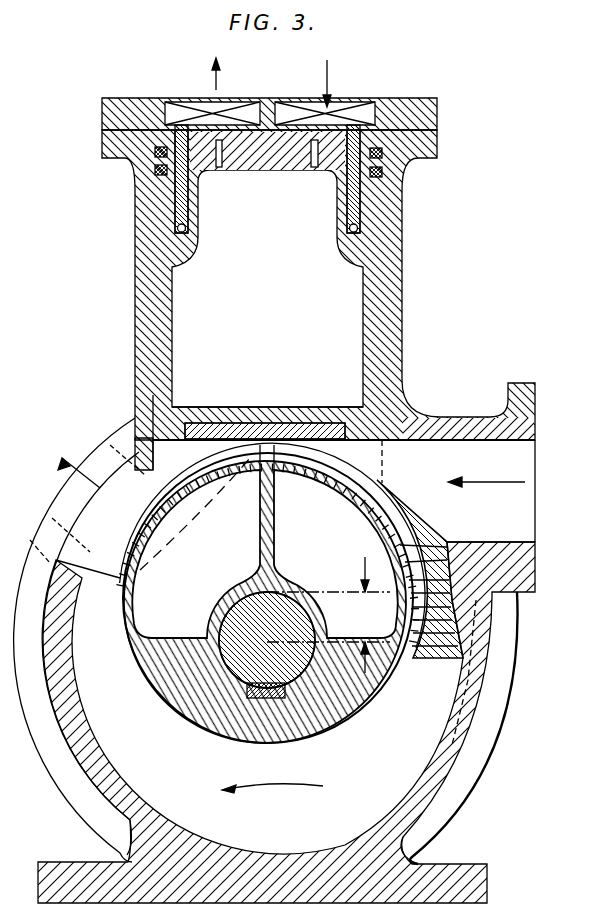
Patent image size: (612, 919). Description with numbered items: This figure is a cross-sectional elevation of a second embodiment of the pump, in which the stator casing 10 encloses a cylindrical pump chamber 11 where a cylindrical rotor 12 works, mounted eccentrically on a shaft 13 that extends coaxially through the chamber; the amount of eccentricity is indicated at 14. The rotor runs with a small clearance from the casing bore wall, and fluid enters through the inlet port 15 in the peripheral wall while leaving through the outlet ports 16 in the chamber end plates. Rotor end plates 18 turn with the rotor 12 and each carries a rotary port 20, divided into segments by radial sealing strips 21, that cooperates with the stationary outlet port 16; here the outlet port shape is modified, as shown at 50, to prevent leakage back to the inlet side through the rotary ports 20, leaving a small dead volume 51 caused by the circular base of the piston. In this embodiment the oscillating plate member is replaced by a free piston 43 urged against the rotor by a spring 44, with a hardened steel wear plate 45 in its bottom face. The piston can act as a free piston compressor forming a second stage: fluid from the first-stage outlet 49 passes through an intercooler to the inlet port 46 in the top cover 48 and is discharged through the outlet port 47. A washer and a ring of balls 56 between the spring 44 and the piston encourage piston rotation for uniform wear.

The stator casing 10 is at (457, 750).
The cylindrical pump chamber 11 is at (440, 707).
The cylindrical rotor 12 is at (213, 708).
The shaft 13 is at (292, 667).
The eccentricity of the rotor 14 is at (328, 615).
The inlet port 15 is at (505, 487).
The outlet ports 16 is at (108, 576).
The rotor end plates 18 is at (388, 783).
The rotary port 20 is at (443, 627).
The radial sealing strips 21 is at (450, 610).
The free piston 43 is at (357, 250).
The spring 44 is at (176, 203).
The hardened steel wear plate 45 is at (238, 455).
The inlet port 46 is at (343, 105).
The outlet port 47 is at (195, 100).
The top cover 48 is at (390, 122).
The outlet 49 is at (78, 500).
The modified outlet port shape 50 is at (218, 498).
The dead volume 51 is at (173, 452).
The ring of balls 56 is at (178, 232).